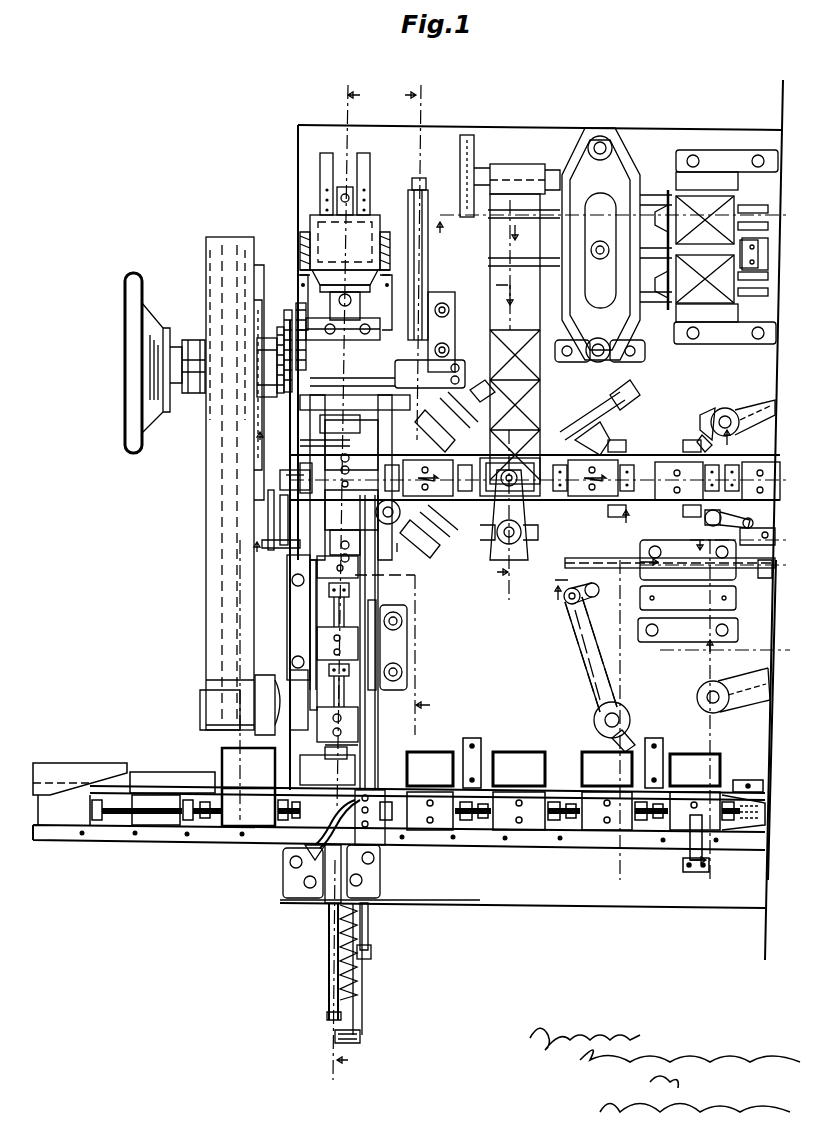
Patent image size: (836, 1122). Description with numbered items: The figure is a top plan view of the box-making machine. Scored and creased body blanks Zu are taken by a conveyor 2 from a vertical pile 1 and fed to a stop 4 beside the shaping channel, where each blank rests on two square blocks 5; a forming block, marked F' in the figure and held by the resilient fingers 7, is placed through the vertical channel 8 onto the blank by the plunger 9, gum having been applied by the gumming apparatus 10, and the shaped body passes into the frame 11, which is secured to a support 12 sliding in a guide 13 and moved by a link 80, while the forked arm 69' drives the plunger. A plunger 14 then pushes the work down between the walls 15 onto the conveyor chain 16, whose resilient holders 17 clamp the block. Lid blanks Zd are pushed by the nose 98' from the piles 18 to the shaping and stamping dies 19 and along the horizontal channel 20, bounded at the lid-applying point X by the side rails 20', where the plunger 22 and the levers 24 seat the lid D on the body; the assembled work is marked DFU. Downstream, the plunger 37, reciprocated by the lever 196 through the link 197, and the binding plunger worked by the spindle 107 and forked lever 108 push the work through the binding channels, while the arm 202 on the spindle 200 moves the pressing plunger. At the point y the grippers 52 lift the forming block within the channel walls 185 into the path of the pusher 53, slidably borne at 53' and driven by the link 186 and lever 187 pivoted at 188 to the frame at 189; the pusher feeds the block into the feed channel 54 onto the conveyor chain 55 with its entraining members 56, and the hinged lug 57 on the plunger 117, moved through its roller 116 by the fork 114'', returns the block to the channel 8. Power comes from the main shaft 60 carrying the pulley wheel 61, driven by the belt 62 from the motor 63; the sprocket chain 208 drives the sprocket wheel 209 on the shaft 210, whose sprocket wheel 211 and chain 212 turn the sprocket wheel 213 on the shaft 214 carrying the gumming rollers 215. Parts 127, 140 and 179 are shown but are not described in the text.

The vertical pile 1 is at (300, 238).
The conveyor 2 is at (343, 187).
The box body blank Zu is at (308, 210).
The box lid blank Zd is at (728, 210).
The stop 4 is at (434, 217).
The square blocks 5 is at (379, 409).
The resilient fingers 7 is at (290, 425).
The vertical channel 8 is at (323, 539).
The plunger 9 is at (535, 292).
The gumming apparatus 10 is at (325, 385).
The frame 11 is at (425, 372).
The support 12 is at (428, 210).
The guide 13 is at (436, 292).
The plunger 14 is at (509, 431).
The walls 15 is at (666, 480).
The conveyor chain 16 is at (690, 423).
The resilient holders 17 is at (556, 519).
The piles 18 is at (728, 190).
The shaping and stamping dies 19 is at (630, 325).
The horizontal channel 20 is at (510, 292).
The side rails 20' is at (577, 396).
The plunger 22 is at (525, 465).
The levers 24 is at (337, 895).
The plunger 37 is at (625, 585).
The grippers 52 is at (365, 785).
The pusher 53 is at (315, 932).
The sliding bearing 53' is at (380, 886).
The feed channel 54 is at (317, 590).
The conveyor chain 55 is at (287, 615).
The entraining members 56 is at (329, 590).
The hinged lug 57 is at (285, 490).
The main shaft 60 is at (279, 330).
The pulley wheel 61 is at (207, 262).
The belt 62 is at (206, 603).
The motor 63 is at (282, 675).
The forked arm 69' is at (311, 433).
The link 80 is at (420, 178).
The nose 98' is at (753, 301).
The rotatable spindle 107 is at (720, 415).
The second lever 108 is at (752, 410).
The forked arm 114'' is at (413, 645).
The roller 116 is at (395, 645).
The plunger 117 is at (380, 605).
The clamp 127 is at (417, 530).
The rail 140 is at (665, 553).
The hose 179 is at (305, 848).
The channel walls 185 is at (378, 700).
The link 186 is at (329, 1020).
The lever 187 is at (360, 1020).
The articulation 188 is at (371, 955).
The frame mounting 189 is at (368, 924).
The lever 196 is at (580, 678).
The link 197 is at (566, 604).
The spindle 200 is at (700, 688).
The arm 202 is at (750, 700).
The sprocket chain 208 is at (275, 650).
The sprocket wheel 209 is at (270, 548).
The shaft 210 is at (280, 520).
The sprocket wheel 211 is at (268, 503).
The sprocket chain 212 is at (262, 462).
The sprocket wheel 213 is at (265, 350).
The shaft 214 is at (287, 312).
The gumming rollers 215 is at (338, 336).
The lid D is at (522, 335).
The stations D,F,U DFU is at (630, 440).
The station F' is at (384, 642).
The lid-applying point X is at (495, 505).
The block-removal point y is at (370, 840).